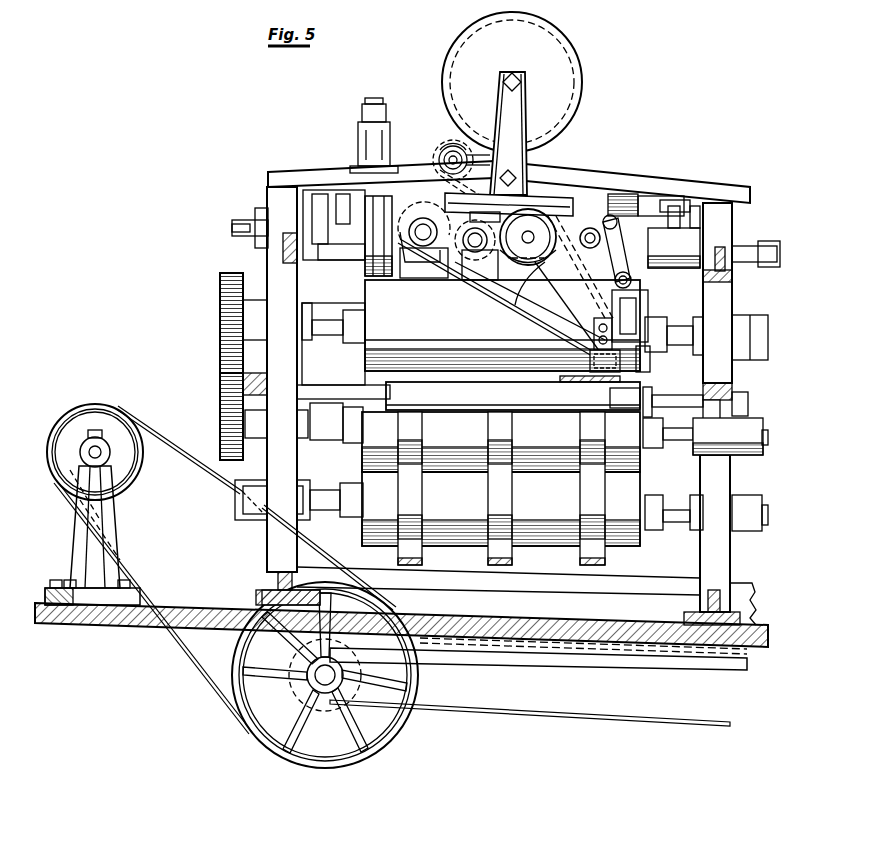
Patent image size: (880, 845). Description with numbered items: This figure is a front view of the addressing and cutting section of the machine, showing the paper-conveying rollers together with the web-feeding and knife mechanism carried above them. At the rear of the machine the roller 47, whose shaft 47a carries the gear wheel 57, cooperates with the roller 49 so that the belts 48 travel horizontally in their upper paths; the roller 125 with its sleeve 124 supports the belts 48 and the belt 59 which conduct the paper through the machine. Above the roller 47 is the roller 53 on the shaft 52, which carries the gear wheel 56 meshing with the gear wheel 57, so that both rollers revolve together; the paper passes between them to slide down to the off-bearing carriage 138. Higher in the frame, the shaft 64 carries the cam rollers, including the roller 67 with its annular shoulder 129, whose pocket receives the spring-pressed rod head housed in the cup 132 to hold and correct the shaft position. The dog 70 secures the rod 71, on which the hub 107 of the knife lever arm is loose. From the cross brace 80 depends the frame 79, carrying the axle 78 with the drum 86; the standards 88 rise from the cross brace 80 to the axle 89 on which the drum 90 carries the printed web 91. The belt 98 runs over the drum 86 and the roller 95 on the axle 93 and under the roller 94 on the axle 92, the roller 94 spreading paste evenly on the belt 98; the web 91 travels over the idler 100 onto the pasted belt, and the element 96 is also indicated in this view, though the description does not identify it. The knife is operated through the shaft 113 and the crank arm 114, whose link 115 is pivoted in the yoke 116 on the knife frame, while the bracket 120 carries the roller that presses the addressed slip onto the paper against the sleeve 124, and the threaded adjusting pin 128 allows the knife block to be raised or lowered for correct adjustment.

The roller 47 is at (539, 437).
The shaft of roller 47 47a is at (338, 455).
The belts 48 is at (494, 380).
The roller 49 is at (565, 509).
The shaft 52 is at (328, 340).
The roller 53 is at (566, 325).
The gear wheel 56 is at (222, 300).
The gear wheel 57 is at (222, 392).
The belt 59 is at (490, 355).
The shaft 64 is at (232, 228).
The roller 67 is at (390, 270).
The dog 70 is at (334, 234).
The rod 71 is at (556, 203).
The axle 78 is at (528, 237).
The frame 79 is at (496, 297).
The cross brace 80 is at (618, 192).
The drum 86 is at (520, 258).
The standards 88 is at (508, 133).
The axle 89 is at (522, 82).
The drum 90 is at (512, 82).
The web 91 is at (480, 148).
The axle 92 is at (478, 212).
The axle 93 is at (420, 222).
The roller 94 is at (476, 250).
The roller 95 is at (429, 263).
The rod 96 is at (574, 284).
The belt 98 is at (495, 295).
The idler 100 is at (440, 150).
The hub 107 is at (642, 198).
The shaft 113 is at (563, 306).
The crank arm 114 is at (714, 244).
The link 115 is at (600, 248).
The yoke 116 is at (632, 282).
The bracket 120 is at (640, 306).
The sleeve 124 is at (614, 398).
The roller 125 is at (567, 396).
The threaded adjusting pin 128 is at (626, 360).
The annular shoulder 129 is at (368, 268).
The cup 132 is at (372, 136).
The off-bearing carriage 138 is at (530, 707).